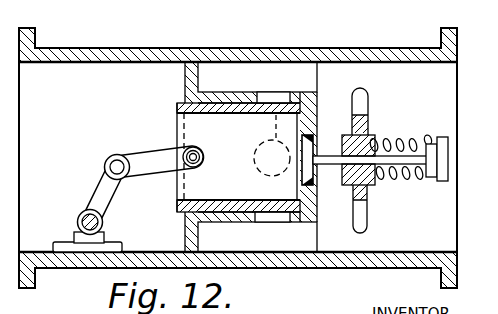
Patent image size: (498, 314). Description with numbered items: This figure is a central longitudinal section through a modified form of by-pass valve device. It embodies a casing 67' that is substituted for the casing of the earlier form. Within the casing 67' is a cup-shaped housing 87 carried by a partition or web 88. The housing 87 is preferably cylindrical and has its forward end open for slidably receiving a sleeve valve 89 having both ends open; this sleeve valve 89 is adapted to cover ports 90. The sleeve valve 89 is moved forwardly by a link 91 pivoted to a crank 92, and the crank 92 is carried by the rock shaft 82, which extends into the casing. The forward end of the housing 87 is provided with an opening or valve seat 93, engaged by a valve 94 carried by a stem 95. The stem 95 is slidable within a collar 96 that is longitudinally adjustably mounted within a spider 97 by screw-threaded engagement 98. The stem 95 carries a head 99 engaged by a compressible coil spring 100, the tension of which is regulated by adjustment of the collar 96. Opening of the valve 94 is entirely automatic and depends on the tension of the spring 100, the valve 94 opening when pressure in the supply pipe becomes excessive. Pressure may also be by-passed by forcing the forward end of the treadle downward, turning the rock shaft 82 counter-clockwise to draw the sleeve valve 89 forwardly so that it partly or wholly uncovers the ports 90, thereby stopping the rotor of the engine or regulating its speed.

The casing 67' is at (238, 145).
The rock shaft 82 is at (80, 221).
The cup-shaped housing 87 is at (215, 98).
The partition or web 88 is at (185, 75).
The sleeve valve 89 is at (177, 113).
The ports 90 is at (268, 218).
The link 91 is at (155, 165).
The crank 92 is at (98, 183).
The opening or valve seat 93 is at (302, 147).
The valve 94 is at (363, 116).
The stem 95 is at (405, 165).
The collar 96 is at (355, 187).
The spider 97 is at (367, 200).
The screw-threaded engagement 98 is at (367, 131).
The head 99 is at (449, 158).
The compressible coil spring 100 is at (411, 139).